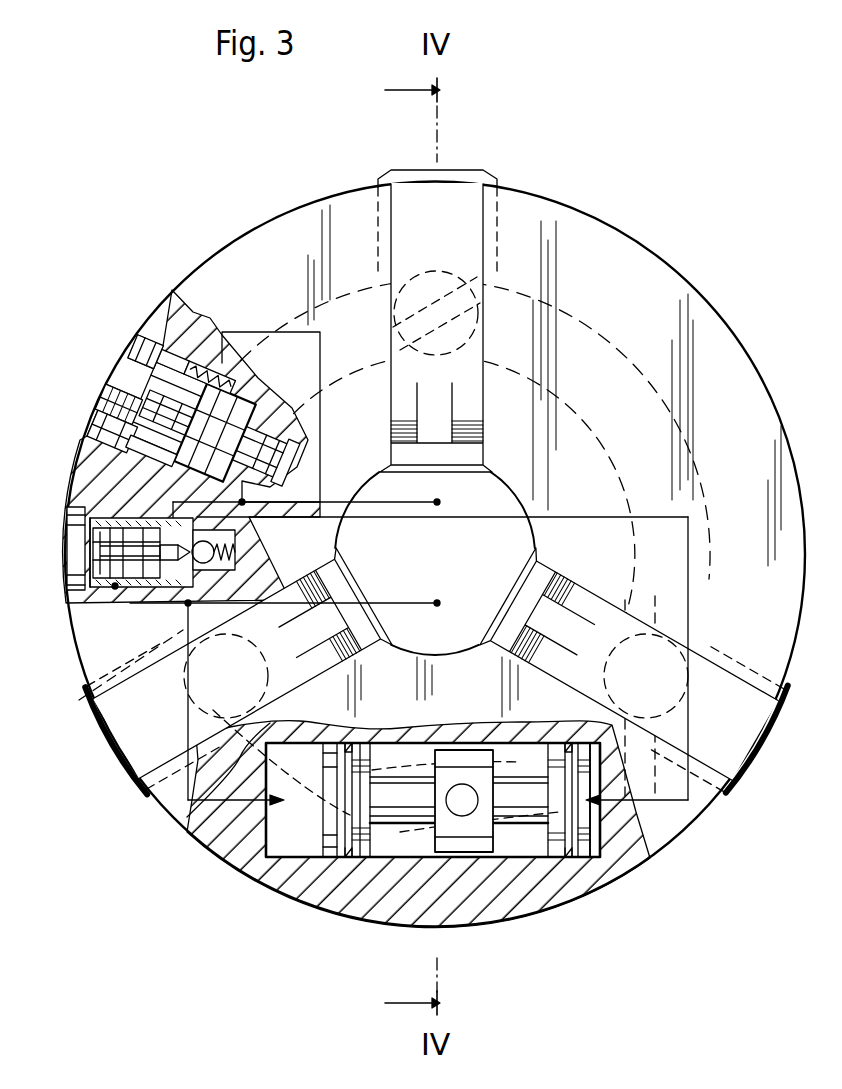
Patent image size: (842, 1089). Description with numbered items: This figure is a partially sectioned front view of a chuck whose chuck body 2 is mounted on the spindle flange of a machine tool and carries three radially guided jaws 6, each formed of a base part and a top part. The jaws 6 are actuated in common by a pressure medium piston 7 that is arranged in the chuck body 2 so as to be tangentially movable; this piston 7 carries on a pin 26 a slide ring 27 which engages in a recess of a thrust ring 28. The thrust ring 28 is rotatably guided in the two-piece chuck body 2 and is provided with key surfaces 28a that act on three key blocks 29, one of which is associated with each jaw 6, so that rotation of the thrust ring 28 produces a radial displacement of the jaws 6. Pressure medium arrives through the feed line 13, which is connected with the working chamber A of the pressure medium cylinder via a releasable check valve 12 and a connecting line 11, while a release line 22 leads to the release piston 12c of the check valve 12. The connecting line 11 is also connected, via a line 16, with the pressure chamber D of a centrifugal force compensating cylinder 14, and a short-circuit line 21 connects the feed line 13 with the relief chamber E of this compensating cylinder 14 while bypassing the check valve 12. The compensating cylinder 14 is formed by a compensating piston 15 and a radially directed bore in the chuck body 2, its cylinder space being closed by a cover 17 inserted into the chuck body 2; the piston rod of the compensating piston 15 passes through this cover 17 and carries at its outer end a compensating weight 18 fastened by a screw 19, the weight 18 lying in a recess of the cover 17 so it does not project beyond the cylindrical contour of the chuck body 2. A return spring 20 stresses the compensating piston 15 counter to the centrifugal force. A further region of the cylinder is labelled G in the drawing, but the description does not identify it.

The chuck body 2 is at (248, 248).
The jaws 6 is at (478, 213).
The pressure medium piston 7 is at (558, 852).
The connecting line 11 is at (487, 518).
The releasable check valve 12 is at (115, 589).
The release piston 12c is at (90, 541).
The feed line 13 is at (397, 504).
The centrifugal force compensating cylinder 14 is at (162, 452).
The compensating piston 15 is at (104, 422).
The line 16 is at (330, 410).
The cover 17 is at (164, 317).
The compensating weight 18 is at (138, 352).
The screw 19 is at (118, 390).
The return spring 20 is at (196, 349).
The short-circuit line 21 is at (243, 502).
The release line 22 is at (407, 602).
The pin 26 is at (466, 808).
The slide ring 27 is at (445, 836).
The thrust ring 28 is at (565, 335).
The key surfaces 28a is at (400, 330).
The key blocks 29 is at (425, 288).
The working chamber A is at (597, 856).
The pressure chamber D is at (173, 443).
The relief chamber E is at (258, 400).
The chamber G is at (304, 839).